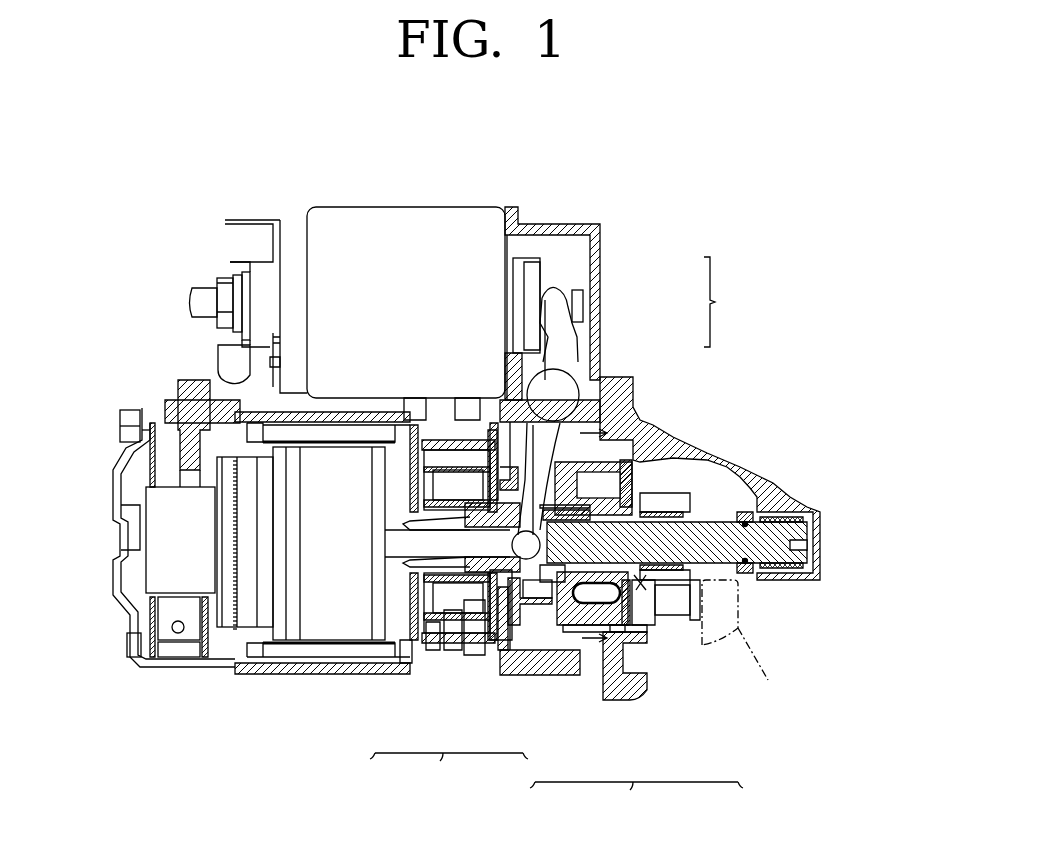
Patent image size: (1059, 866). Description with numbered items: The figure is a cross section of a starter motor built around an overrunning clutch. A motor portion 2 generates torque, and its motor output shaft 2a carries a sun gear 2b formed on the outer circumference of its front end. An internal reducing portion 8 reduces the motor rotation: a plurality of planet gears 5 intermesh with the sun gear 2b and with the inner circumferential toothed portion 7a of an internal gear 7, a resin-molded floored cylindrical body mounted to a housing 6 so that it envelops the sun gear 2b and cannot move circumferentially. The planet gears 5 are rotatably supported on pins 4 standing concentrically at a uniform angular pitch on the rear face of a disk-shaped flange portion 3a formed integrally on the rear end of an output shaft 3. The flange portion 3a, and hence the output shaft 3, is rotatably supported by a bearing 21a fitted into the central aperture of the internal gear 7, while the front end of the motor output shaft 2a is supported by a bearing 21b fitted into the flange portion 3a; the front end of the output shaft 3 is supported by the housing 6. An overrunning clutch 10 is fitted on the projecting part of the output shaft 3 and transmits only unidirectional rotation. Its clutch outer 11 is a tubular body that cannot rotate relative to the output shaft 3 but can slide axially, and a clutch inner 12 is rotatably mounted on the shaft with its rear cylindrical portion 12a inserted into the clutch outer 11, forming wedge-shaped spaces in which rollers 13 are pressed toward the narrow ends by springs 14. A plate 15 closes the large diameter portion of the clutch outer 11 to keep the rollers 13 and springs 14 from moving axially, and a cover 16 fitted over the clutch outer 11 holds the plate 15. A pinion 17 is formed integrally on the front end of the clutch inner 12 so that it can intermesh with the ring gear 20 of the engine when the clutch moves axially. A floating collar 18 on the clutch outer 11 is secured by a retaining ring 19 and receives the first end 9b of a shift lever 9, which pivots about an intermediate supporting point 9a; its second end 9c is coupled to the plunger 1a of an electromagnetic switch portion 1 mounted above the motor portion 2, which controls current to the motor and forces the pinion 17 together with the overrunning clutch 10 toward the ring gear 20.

The electromagnetic switch portion 1 is at (408, 226).
The plunger 1a is at (598, 250).
The motor portion 2 is at (323, 620).
The motor output shaft 2a is at (133, 552).
The sun gear 2b is at (407, 640).
The output shaft 3 is at (705, 538).
The flange portion 3a is at (503, 640).
The pins 4 is at (452, 640).
The planet gears 5 is at (428, 650).
The housing 6 is at (652, 420).
The internal gear 7 is at (475, 640).
The inner circumferential toothed portion 7a is at (465, 397).
The internal reducing portion 8 is at (449, 607).
The shift lever 9 is at (622, 408).
The intermediate supporting point 9a is at (563, 385).
The first end 9b is at (545, 470).
The second end 9c is at (558, 305).
The overrunning clutch 10 is at (625, 639).
The clutch outer 11 is at (596, 622).
The clutch inner 12 is at (665, 586).
The cylindrical portion 12a is at (633, 480).
The rollers 13 is at (579, 628).
The springs 14 is at (650, 628).
The plate 15 is at (648, 600).
The cover 16 is at (606, 636).
The pinion 17 is at (692, 600).
The floating collar 18 is at (525, 625).
The retaining ring 19 is at (548, 615).
The ring gear 20 is at (743, 653).
The bearing 21a is at (505, 395).
The bearing 21b is at (413, 397).